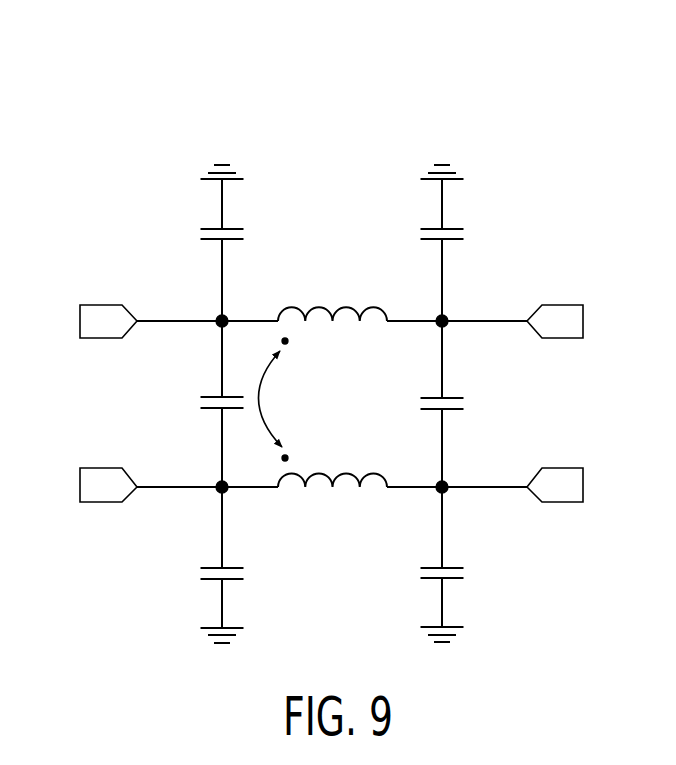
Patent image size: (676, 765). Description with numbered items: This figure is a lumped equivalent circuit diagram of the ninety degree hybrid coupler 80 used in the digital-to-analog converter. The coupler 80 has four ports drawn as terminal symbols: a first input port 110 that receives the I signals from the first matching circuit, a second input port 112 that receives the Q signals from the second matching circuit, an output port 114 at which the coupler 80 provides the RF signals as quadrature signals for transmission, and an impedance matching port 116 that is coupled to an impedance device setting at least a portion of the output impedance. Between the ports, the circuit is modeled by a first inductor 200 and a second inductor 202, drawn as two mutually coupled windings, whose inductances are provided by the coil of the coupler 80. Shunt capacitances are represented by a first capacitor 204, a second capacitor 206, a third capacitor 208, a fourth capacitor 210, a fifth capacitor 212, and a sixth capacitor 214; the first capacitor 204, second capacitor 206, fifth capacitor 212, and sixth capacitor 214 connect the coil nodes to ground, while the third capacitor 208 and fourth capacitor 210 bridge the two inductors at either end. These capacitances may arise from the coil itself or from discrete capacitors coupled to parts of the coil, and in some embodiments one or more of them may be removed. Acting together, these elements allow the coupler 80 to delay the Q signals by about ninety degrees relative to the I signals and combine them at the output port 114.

The 90 degree hybrid coupler 80 is at (409, 98).
The first inductor 200 is at (318, 305).
The second inductor 202 is at (318, 470).
The first capacitor 204 is at (235, 229).
The second capacitor 206 is at (430, 229).
The third capacitor 208 is at (212, 397).
The fourth capacitor 210 is at (452, 398).
The fifth capacitor 212 is at (210, 568).
The sixth capacitor 214 is at (452, 568).
The first input port 110 is at (563, 338).
The second input port 112 is at (100, 503).
The output port 114 is at (563, 503).
The impedance matching port 116 is at (100, 339).